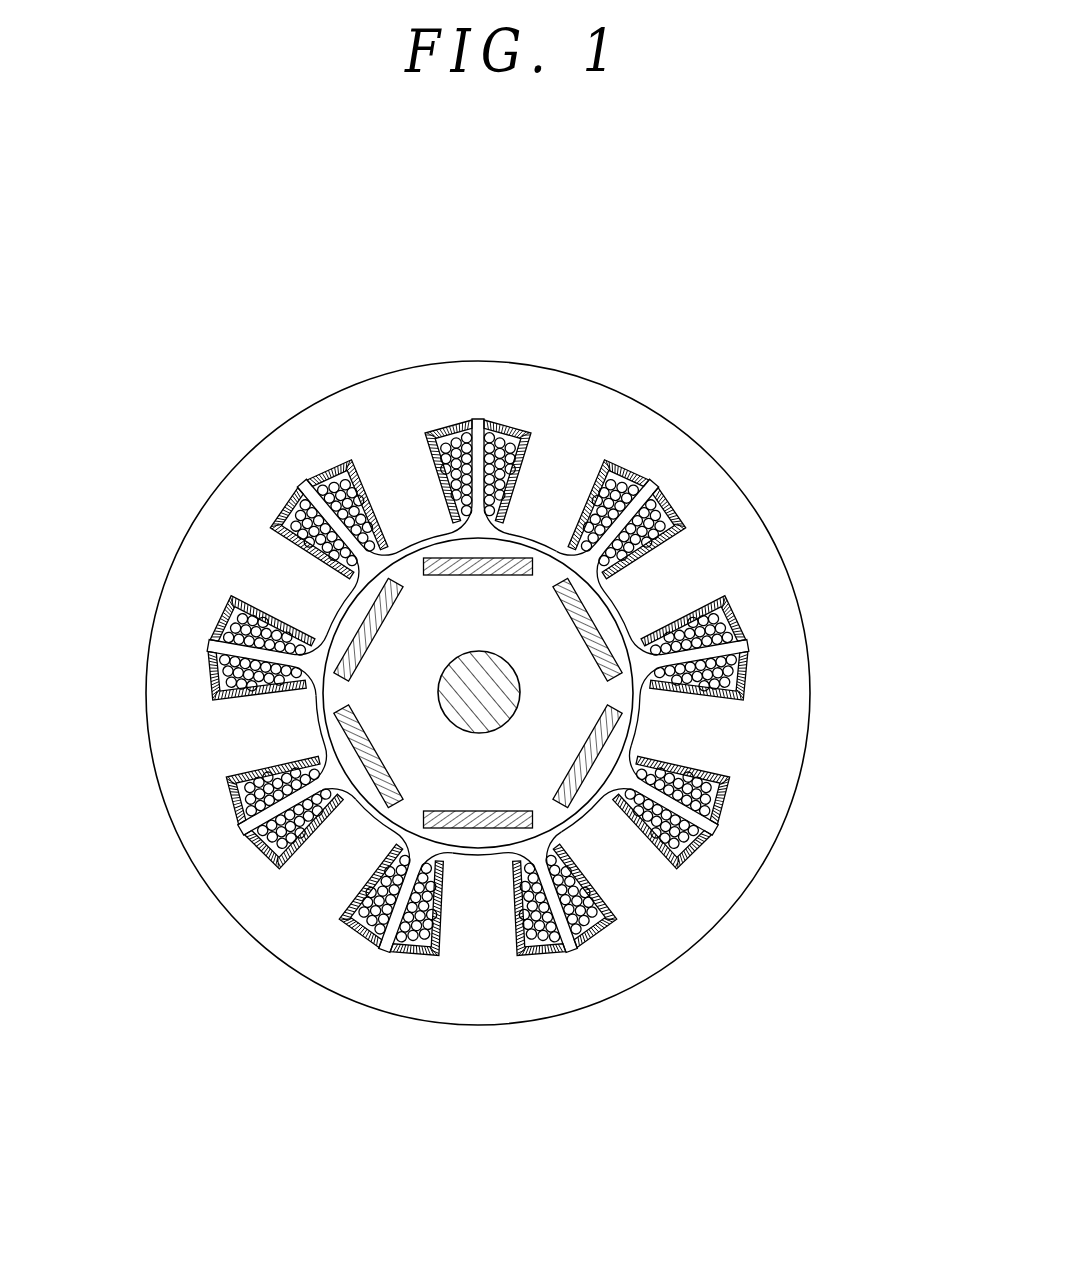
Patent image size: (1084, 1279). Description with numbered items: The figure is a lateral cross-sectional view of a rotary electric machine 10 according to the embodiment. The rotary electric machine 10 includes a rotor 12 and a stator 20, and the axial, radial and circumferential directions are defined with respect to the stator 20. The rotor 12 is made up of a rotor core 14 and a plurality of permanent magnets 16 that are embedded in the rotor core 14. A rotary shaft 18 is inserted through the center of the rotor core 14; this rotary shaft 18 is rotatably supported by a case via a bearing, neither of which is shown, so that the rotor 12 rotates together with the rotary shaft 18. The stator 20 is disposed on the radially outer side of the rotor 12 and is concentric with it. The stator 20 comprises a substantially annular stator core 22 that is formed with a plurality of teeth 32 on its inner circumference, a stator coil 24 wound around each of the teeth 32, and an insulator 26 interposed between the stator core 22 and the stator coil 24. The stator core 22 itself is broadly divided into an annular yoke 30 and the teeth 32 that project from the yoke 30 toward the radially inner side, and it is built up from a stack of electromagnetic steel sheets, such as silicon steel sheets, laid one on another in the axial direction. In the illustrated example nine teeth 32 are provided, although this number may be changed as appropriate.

The rotary electric machine 10 is at (167, 401).
The rotor 12 is at (442, 1137).
The rotor core 14 is at (432, 760).
The permanent magnet 16 is at (482, 818).
The rotary shaft 18 is at (482, 695).
The stator 20 is at (823, 543).
The stator core 22 is at (348, 276).
The stator coil 24 is at (512, 432).
The insulator 26 is at (680, 510).
The yoke 30 is at (273, 455).
The tooth 32 is at (405, 500).